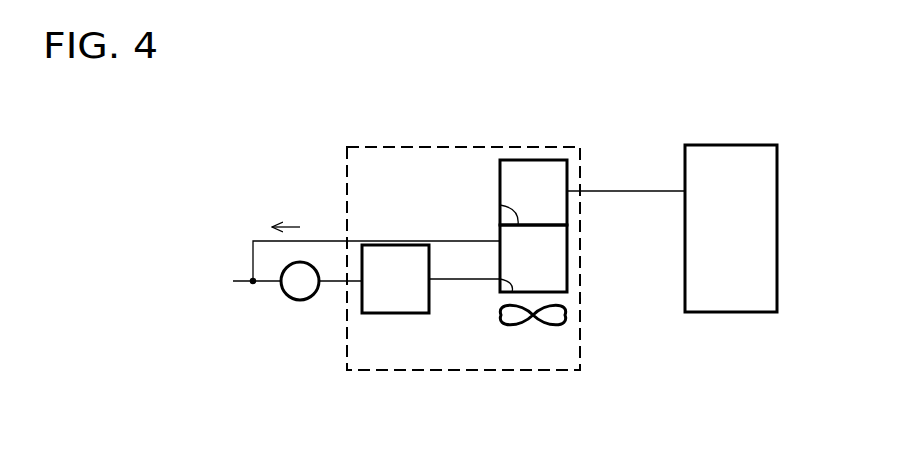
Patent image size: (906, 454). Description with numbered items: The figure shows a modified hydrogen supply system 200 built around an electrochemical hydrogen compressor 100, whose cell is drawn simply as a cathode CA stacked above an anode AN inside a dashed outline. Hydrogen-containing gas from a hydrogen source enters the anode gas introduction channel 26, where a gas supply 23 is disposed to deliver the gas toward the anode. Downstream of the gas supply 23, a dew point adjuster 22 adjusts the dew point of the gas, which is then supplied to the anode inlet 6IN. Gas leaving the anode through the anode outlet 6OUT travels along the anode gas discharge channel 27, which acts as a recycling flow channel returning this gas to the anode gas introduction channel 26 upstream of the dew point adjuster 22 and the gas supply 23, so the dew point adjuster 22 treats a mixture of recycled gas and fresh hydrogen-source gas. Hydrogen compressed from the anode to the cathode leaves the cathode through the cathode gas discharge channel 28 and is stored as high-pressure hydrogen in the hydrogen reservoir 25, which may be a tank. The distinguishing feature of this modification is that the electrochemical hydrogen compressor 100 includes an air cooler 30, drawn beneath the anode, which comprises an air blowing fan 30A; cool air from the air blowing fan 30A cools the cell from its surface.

The hydrogen supply system 200 is at (479, 215).
The electrochemical hydrogen compressor 100 is at (530, 147).
The anode outlet 6OUT is at (500, 205).
The anode inlet 6IN is at (512, 292).
The anode gas discharge channel 27 is at (447, 240).
The anode gas introduction channel 26 is at (255, 283).
The gas supply 23 is at (312, 299).
The dew point adjuster 22 is at (431, 279).
The hydrogen reservoir 25 is at (731, 228).
The cathode gas discharge channel 28 is at (610, 192).
The air blowing fan 30A is at (525, 323).
The air cooler 30 is at (560, 328).